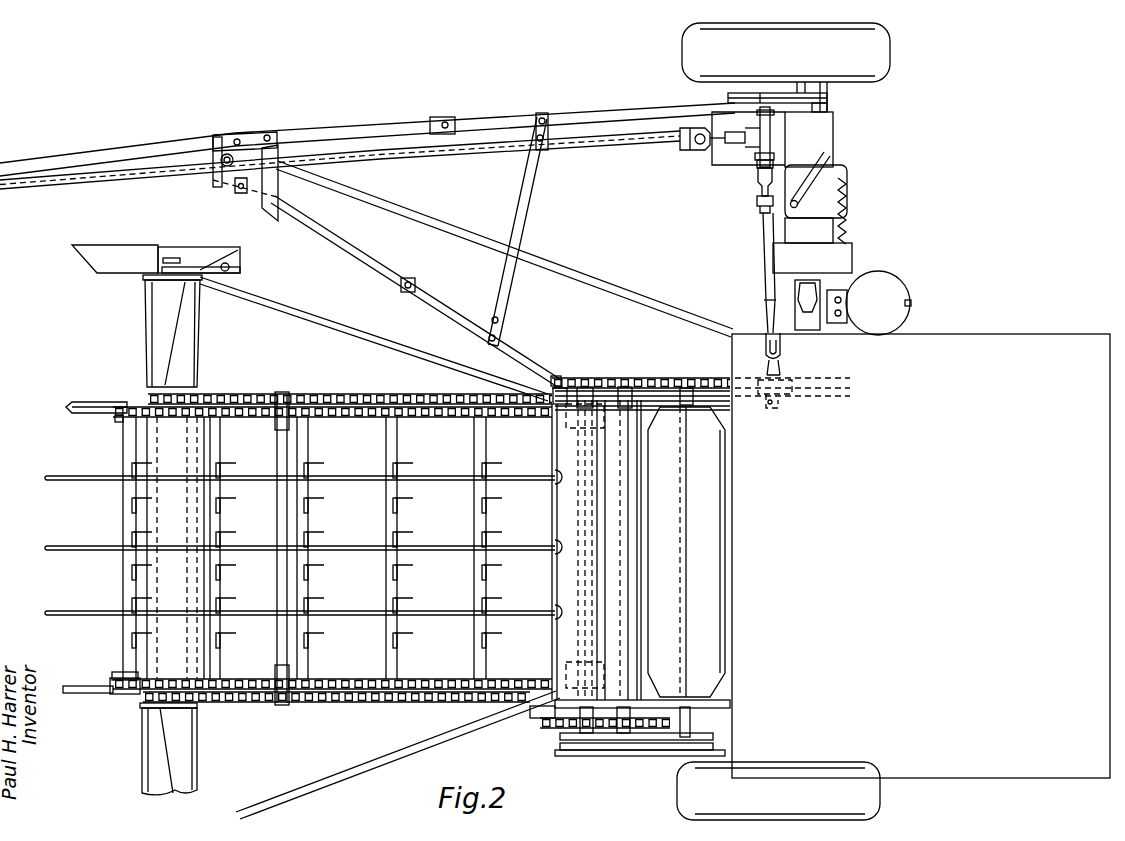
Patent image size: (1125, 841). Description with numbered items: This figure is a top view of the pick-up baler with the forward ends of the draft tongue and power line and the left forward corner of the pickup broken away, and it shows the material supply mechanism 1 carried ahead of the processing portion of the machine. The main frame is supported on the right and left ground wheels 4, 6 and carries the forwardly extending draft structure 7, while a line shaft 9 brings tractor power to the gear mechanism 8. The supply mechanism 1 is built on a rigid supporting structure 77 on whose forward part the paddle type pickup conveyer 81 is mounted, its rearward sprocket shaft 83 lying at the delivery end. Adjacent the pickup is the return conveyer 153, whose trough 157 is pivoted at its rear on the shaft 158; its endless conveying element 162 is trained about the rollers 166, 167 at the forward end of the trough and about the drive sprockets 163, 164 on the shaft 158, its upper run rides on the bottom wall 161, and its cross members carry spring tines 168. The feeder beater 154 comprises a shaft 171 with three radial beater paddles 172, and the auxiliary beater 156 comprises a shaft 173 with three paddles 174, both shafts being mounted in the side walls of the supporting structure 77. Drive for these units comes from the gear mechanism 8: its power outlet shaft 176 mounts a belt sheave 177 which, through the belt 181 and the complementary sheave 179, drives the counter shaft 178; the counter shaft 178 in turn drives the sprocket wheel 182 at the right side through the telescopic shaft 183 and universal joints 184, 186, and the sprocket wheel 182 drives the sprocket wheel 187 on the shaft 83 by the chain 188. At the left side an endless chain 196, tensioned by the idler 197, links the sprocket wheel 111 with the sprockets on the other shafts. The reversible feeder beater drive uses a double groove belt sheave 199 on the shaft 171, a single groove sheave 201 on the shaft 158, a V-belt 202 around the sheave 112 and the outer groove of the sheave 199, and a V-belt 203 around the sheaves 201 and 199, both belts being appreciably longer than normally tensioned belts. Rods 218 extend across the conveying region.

The material supply mechanism 1 is at (362, 530).
The right ground wheel 4 is at (889, 65).
The left ground wheel 6 is at (878, 798).
The draft structure 7 is at (352, 250).
The gear mechanism 8 is at (829, 133).
The line shaft 9 is at (636, 138).
The supporting structure 77 is at (706, 393).
The pickup conveyer 81 is at (322, 394).
The rearward sprocket shaft 83 is at (586, 378).
The sprocket wheel 111 is at (747, 138).
The sheave 112 is at (626, 751).
The return conveyer 153 is at (122, 519).
The feeder beater 154 is at (766, 585).
The auxiliary beater 156 is at (636, 375).
The trough 157 is at (121, 696).
The shaft 158 is at (590, 512).
The bottom wall 161 is at (148, 578).
The endless conveying element 162 is at (244, 418).
The drive sprocket 163 is at (566, 676).
The drive sprocket 164 is at (566, 418).
The roller 166 is at (118, 674).
The roller 167 is at (118, 420).
The spring tines 168 is at (228, 500).
The shaft 171 is at (684, 723).
The beater paddles 172 is at (660, 516).
The shaft 173 is at (620, 582).
The beater paddles 174 is at (643, 661).
The power outlet shaft 176 is at (829, 107).
The belt sheave 177 is at (823, 93).
The counter shaft 178 is at (760, 170).
The belt sheave 179 is at (757, 93).
The belt 181 is at (728, 97).
The sprocket wheel 182 is at (793, 383).
The telescopic shaft 183 is at (767, 289).
The universal joint 184 is at (758, 198).
The universal joint 186 is at (784, 351).
The sprocket wheel 187 is at (570, 378).
The chain 188 is at (666, 378).
The endless chain 196 is at (538, 723).
The tensioning idler 197 is at (533, 730).
The double groove belt sheave 199 is at (712, 747).
The single groove belt sheave 201 is at (572, 741).
The V-belt 202 is at (618, 740).
The V-belt 203 is at (580, 733).
The rod 218 is at (68, 482).